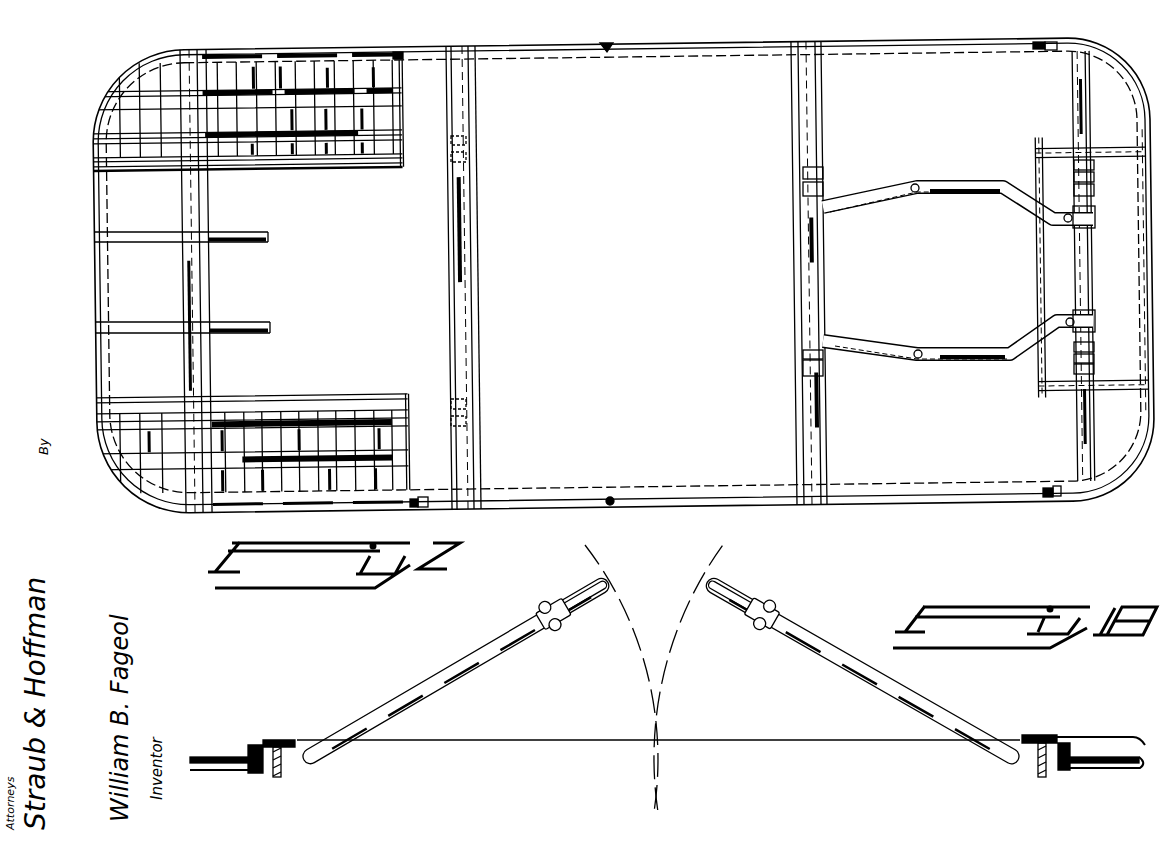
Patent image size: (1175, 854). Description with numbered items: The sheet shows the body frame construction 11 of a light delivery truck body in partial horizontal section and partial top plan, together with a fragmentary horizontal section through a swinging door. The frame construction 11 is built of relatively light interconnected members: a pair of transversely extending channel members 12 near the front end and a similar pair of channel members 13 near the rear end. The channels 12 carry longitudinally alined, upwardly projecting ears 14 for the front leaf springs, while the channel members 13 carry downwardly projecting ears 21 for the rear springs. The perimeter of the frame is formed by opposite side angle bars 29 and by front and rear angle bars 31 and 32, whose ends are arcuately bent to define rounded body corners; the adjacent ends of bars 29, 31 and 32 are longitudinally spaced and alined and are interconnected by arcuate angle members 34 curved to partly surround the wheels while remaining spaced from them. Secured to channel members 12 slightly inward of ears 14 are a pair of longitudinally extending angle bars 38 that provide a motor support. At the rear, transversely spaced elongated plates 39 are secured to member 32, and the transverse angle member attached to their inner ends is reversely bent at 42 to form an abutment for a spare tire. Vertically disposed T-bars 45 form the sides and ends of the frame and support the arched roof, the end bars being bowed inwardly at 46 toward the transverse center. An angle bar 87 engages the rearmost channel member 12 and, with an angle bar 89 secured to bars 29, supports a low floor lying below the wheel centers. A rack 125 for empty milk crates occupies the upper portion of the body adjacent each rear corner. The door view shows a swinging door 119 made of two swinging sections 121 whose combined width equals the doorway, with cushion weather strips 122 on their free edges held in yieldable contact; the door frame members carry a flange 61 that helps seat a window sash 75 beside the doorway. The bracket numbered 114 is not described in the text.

In FIG. 2, the body frame construction 11 is at (745, 496).
In FIG. 2, the channel members 12 is at (826, 434).
In FIG. 2, the channel members 13 is at (188, 276).
In FIG. 2, the ears 14 is at (1092, 203).
In FIG. 2, the ears 21 is at (450, 164).
In FIG. 2, the side angle bars 29 is at (650, 55).
In FIG. 2, the front angle bar 31 is at (1135, 442).
In FIG. 2, the rear angle bar 32 is at (176, 494).
In FIG. 2, the arcuate angle members 34 is at (990, 48).
In FIG. 2, the angle bars 38 is at (968, 196).
In FIG. 2, the elongated plates 39 is at (262, 244).
In FIG. 2, the reversely bent portion 42 is at (275, 322).
In FIG. 2, the T-bars 45 is at (396, 62).
In FIG. 18, the T-bars 45 is at (285, 762).
In FIG. 2, the inwardly bowed portions 46 is at (160, 168).
In FIG. 2, the angle bar 87 is at (803, 372).
In FIG. 2, the angle bar 89 is at (480, 348).
In FIG. 2, the bracket 114 is at (830, 190).
In FIG. 2, the rack 125 is at (338, 98).
In FIG. 18, the flange 61 is at (252, 774).
In FIG. 18, the window sash 75 is at (215, 754).
In FIG. 18, the swinging door 119 is at (794, 598).
In FIG. 18, the swinging sections 121 is at (472, 664).
In FIG. 18, the cushion weather strips 122 is at (610, 582).